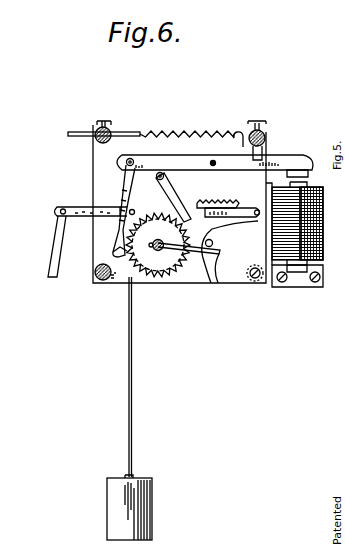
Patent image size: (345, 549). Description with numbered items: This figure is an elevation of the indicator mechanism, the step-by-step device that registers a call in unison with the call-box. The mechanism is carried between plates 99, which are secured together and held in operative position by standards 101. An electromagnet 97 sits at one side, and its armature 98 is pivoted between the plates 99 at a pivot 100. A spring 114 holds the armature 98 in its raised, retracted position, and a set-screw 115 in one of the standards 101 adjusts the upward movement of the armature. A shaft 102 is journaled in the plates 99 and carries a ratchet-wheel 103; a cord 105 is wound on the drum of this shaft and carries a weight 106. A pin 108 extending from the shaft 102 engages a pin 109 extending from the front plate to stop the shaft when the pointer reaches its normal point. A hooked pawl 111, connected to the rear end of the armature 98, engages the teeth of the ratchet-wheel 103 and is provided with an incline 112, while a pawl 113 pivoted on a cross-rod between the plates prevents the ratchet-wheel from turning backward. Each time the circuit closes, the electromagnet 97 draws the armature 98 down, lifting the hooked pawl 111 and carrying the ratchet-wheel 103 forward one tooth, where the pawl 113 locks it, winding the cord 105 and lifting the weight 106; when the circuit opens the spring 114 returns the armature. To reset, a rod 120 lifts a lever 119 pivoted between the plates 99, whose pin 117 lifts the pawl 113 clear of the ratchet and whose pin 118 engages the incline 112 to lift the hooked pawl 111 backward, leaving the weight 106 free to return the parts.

The electromagnet 97 is at (308, 223).
The armature 98 is at (297, 160).
The plates 99 is at (93, 163).
The armature pivot 100 is at (211, 162).
The standards 101 is at (267, 129).
The shaft 102 is at (173, 272).
The ratchet-wheel 103 is at (168, 279).
The cord 105 is at (132, 413).
The weight 106 is at (113, 498).
The pin 108 is at (217, 252).
The pin 109 is at (214, 243).
The hooked pawl 111 is at (112, 233).
The incline 112 is at (126, 208).
The pawl 113 is at (179, 208).
The spring 114 is at (157, 131).
The set-screw 115 is at (255, 120).
The pin 117 is at (208, 203).
The pin 118 is at (120, 211).
The lever 119 is at (84, 208).
The rod 120 is at (55, 259).